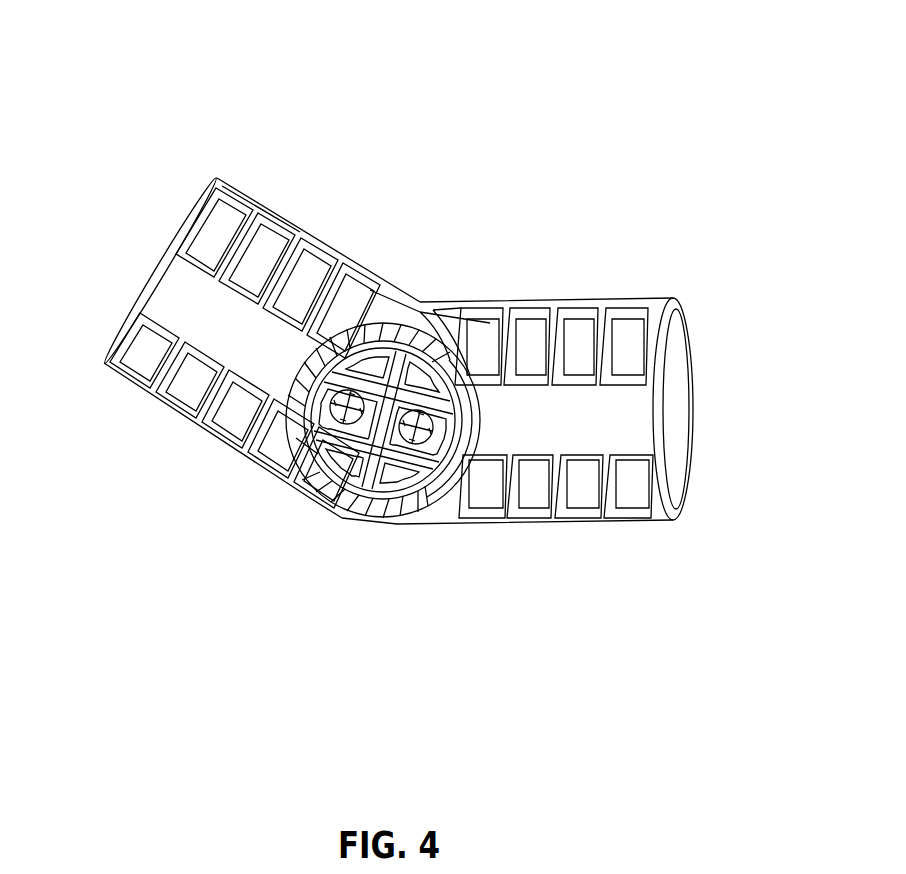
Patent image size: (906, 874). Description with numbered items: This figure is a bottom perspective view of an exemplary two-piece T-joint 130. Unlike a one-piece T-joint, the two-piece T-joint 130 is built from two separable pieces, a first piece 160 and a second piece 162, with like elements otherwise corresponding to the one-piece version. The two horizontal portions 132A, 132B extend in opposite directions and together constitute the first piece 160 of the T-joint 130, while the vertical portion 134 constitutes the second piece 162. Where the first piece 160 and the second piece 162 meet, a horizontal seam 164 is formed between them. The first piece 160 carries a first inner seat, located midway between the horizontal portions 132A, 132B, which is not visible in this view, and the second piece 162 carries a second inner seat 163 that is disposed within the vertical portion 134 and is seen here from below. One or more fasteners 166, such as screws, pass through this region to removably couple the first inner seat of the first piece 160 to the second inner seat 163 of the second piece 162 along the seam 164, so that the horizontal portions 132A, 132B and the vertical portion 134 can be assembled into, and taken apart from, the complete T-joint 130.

The two-piece T-joint 130 is at (142, 114).
The horizontal portion 132A is at (638, 420).
The horizontal portion 132B is at (167, 291).
The vertical portion 134 is at (300, 440).
The first piece 160 is at (322, 232).
The second piece 162 is at (396, 505).
The second inner seat 163 is at (352, 468).
The horizontal seam 164 is at (417, 305).
The fastener 166 is at (435, 445).